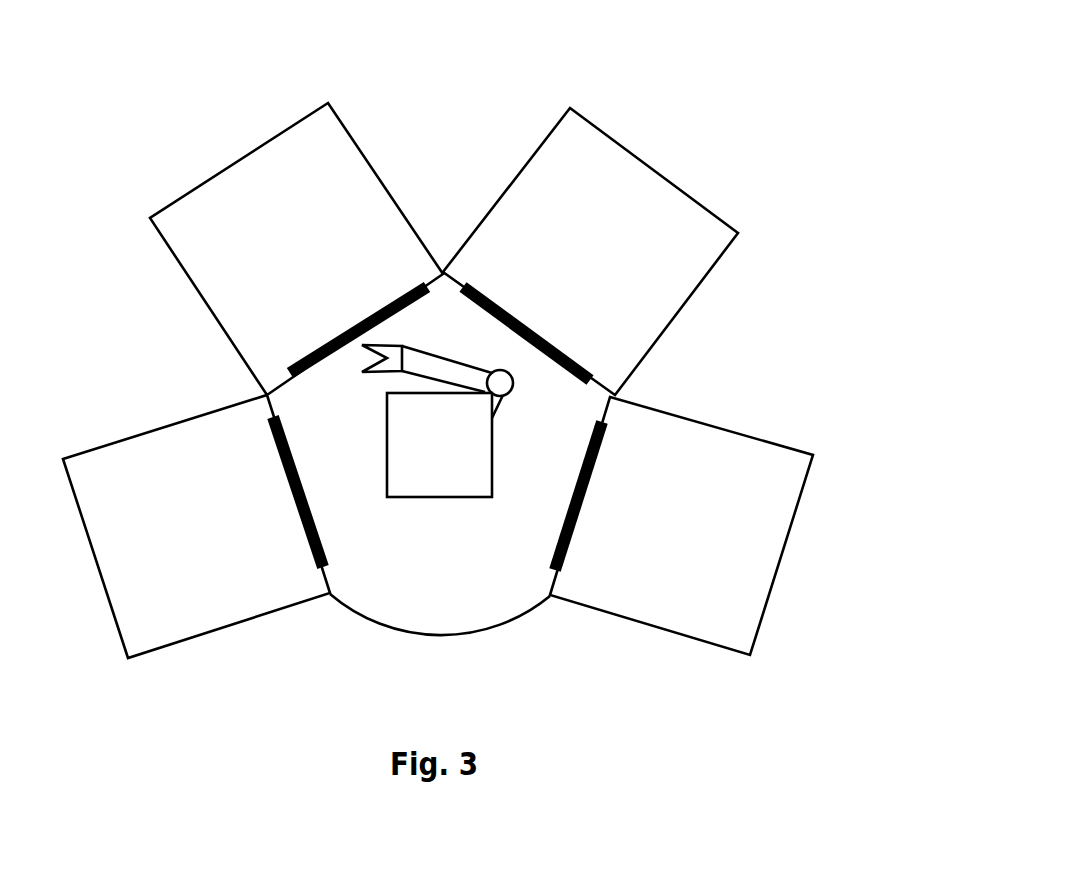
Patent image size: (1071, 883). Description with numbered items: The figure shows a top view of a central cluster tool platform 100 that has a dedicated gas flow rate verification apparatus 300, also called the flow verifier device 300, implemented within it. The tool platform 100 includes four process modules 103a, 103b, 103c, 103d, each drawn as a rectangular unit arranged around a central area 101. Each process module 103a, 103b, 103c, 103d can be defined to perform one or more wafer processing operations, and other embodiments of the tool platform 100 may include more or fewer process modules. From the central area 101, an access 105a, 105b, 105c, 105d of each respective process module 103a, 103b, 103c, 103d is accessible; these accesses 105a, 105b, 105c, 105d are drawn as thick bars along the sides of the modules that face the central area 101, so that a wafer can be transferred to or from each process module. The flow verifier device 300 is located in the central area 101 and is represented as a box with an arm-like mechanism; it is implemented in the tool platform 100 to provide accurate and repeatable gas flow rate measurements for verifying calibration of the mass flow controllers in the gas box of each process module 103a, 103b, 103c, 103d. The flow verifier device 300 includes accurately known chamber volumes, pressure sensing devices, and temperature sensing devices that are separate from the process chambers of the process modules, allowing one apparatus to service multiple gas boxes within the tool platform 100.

The tool platform 100 is at (742, 122).
The central area 101 is at (467, 593).
The process module 103a is at (610, 201).
The process module 103b is at (688, 476).
The process module 103c is at (240, 476).
The process module 103d is at (347, 201).
The access 105a is at (523, 320).
The access 105b is at (585, 498).
The access 105c is at (288, 488).
The access 105d is at (357, 328).
The gas flow rate verification apparatus 300 is at (467, 464).